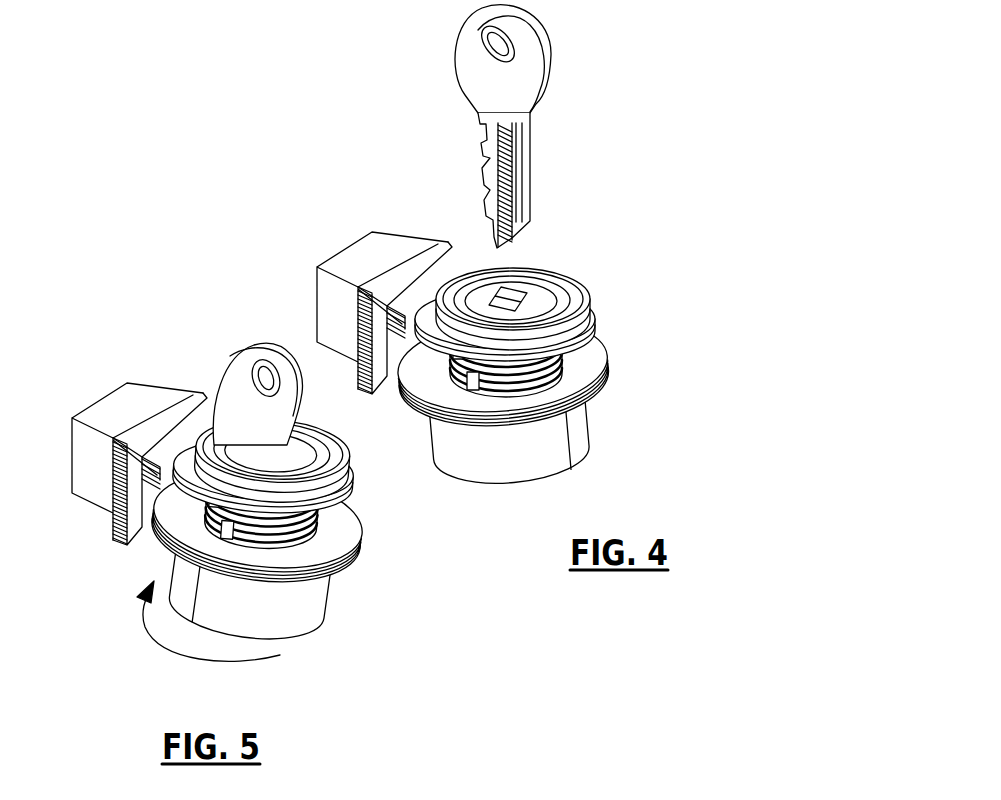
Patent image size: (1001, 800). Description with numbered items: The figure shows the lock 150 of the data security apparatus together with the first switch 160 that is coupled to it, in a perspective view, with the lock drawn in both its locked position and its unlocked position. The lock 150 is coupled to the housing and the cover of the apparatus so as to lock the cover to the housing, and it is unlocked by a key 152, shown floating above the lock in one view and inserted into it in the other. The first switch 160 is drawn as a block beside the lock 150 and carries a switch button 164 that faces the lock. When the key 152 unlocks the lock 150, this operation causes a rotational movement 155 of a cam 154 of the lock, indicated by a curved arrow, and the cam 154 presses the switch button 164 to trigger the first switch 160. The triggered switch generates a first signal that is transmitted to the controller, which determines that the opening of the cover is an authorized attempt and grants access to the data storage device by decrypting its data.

In FIG. 4, the lock 150 is at (546, 301).
In FIG. 5, the lock 150 is at (311, 494).
In FIG. 4, the key 152 is at (527, 90).
In FIG. 5, the key 152 is at (228, 393).
In FIG. 4, the cam 154 is at (555, 401).
In FIG. 5, the cam 154 is at (262, 573).
In FIG. 5, the rotational movement 155 is at (150, 643).
In FIG. 4, the first switch 160 is at (382, 272).
In FIG. 5, the first switch 160 is at (137, 420).
In FIG. 4, the switch button 164 is at (356, 297).
In FIG. 5, the switch button 164 is at (111, 444).